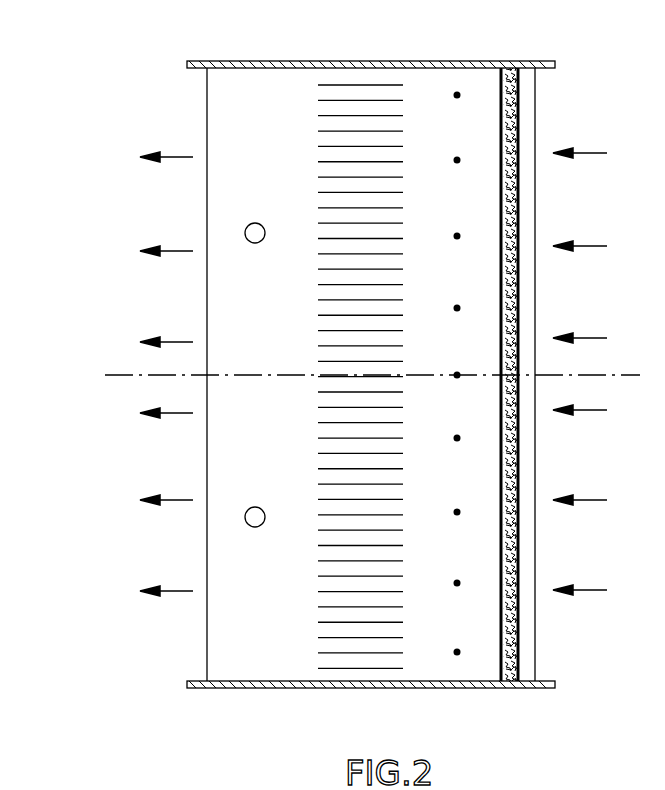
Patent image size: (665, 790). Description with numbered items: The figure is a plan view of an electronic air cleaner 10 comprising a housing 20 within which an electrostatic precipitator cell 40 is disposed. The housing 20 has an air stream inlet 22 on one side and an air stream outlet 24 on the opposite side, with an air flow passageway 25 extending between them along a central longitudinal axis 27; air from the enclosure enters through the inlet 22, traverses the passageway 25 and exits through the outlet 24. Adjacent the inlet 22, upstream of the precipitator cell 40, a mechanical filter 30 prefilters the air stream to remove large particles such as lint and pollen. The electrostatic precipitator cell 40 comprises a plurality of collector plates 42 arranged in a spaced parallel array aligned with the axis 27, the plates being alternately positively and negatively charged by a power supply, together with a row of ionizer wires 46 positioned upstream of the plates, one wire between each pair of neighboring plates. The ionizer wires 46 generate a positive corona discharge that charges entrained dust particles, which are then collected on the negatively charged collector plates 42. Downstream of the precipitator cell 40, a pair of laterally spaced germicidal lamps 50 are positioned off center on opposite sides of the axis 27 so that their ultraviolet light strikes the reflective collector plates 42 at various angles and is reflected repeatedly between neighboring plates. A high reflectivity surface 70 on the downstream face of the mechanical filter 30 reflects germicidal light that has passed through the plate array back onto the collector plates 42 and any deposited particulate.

The electronic air cleaner 10 is at (600, 86).
The housing 20 is at (228, 62).
The air stream inlet 22 is at (536, 211).
The air stream outlet 24 is at (207, 211).
The air flow passageway 25 is at (471, 491).
The central longitudinal axis 27 is at (122, 375).
The mechanical filter 30 is at (520, 135).
The electrostatic precipitator cell 40 is at (430, 78).
The collector plates 42 is at (390, 216).
The ionizer wires 46 is at (458, 310).
The germicidal lamp 50 is at (262, 223).
The high reflectivity surface 70 is at (500, 406).